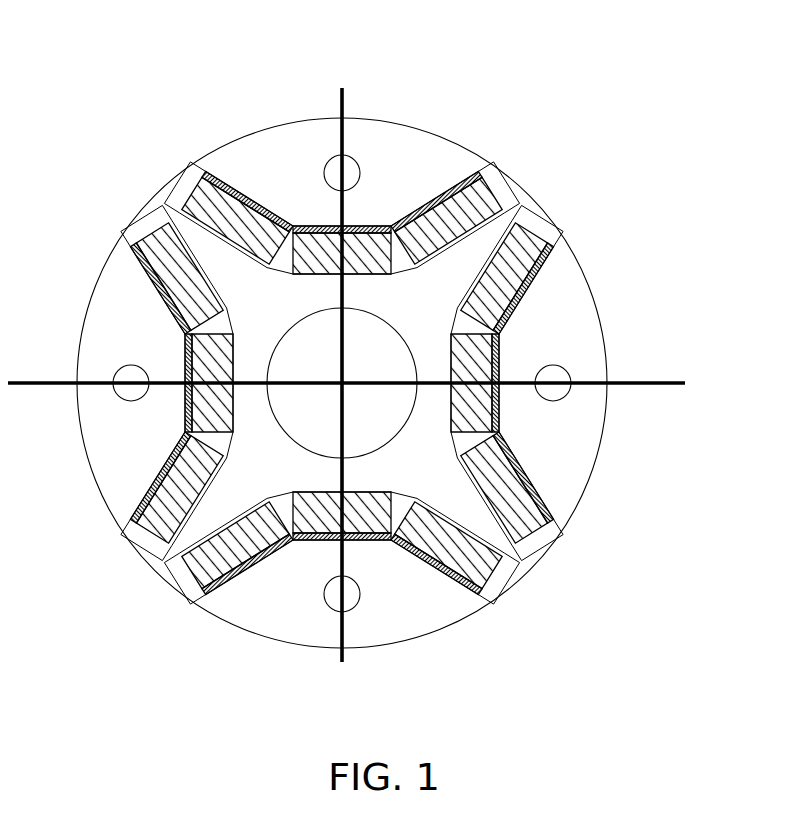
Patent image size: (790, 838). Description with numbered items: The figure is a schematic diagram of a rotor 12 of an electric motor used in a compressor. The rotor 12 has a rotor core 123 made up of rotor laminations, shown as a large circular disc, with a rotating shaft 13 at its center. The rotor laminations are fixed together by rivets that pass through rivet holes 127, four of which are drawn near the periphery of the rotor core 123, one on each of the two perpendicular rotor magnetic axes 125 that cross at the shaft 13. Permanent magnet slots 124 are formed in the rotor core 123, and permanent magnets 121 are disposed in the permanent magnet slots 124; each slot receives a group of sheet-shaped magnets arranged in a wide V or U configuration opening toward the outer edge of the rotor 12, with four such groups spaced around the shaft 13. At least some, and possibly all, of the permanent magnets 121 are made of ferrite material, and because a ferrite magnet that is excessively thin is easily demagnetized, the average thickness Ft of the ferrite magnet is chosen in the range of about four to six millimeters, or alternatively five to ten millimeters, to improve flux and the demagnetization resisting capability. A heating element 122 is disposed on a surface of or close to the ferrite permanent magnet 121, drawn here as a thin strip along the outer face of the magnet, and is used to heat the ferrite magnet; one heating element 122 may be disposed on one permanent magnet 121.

The rotor 12 is at (367, 365).
The rotating shaft 13 is at (305, 372).
The permanent magnet 121 is at (522, 260).
The heating element 122 is at (538, 278).
The rotor core 123 is at (400, 618).
The permanent magnet slot 124 is at (470, 443).
The rotor magnetic axis 125 is at (343, 102).
The rivet hole 127 is at (128, 397).
The average thickness of the ferrite magnet Ft is at (308, 270).